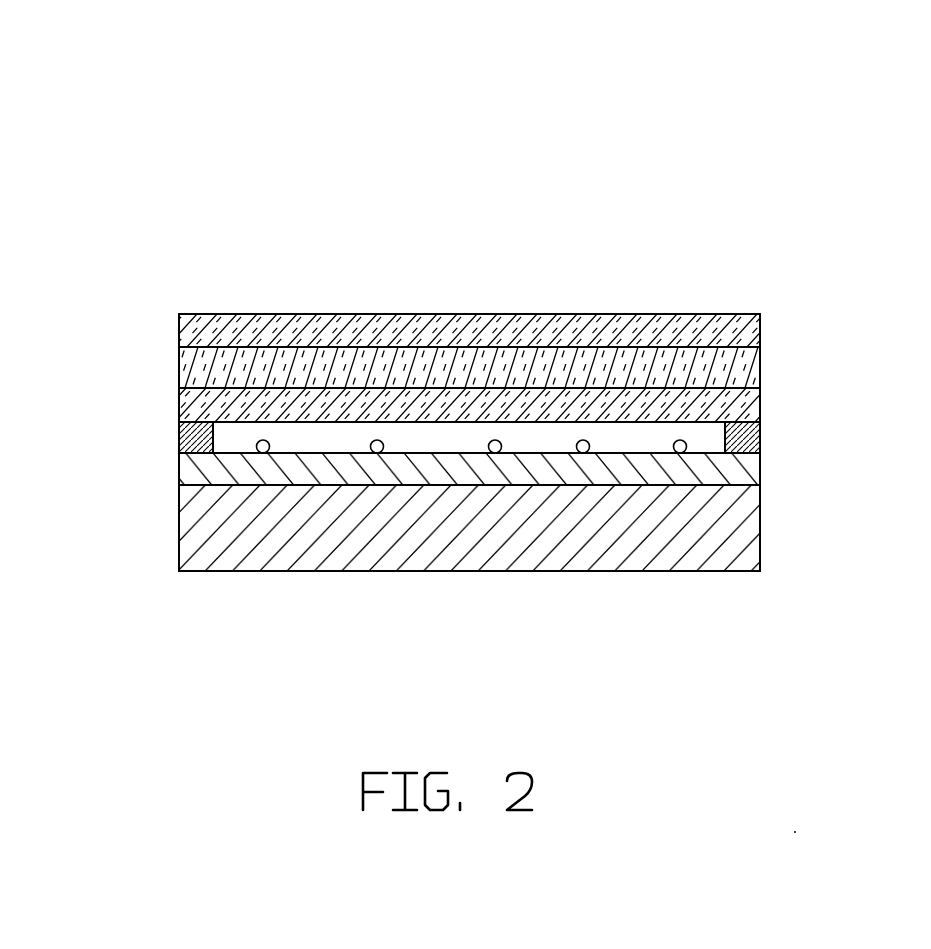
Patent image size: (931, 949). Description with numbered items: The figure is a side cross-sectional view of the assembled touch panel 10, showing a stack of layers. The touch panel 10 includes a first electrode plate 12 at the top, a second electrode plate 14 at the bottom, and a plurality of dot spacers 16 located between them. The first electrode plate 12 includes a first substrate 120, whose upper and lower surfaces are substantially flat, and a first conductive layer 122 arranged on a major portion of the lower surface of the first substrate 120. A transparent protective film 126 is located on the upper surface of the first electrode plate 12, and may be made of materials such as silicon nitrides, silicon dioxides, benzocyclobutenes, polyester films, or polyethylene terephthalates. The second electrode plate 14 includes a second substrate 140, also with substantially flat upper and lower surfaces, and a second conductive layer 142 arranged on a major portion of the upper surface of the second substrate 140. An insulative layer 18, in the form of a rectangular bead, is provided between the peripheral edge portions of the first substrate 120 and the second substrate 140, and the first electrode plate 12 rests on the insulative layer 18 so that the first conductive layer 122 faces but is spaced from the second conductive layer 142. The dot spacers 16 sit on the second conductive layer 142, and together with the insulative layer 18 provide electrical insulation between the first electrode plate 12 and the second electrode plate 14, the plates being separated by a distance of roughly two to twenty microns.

The touch panel 10 is at (460, 39).
The first electrode plate 12 is at (391, 362).
The transparent protective film 126 is at (198, 336).
The first substrate 120 is at (198, 373).
The first conductive layer 122 is at (198, 410).
The dot spacers 16 is at (256, 447).
The insulative layer 18 is at (748, 433).
The second electrode plate 14 is at (390, 506).
The second conductive layer 142 is at (200, 475).
The second substrate 140 is at (202, 547).